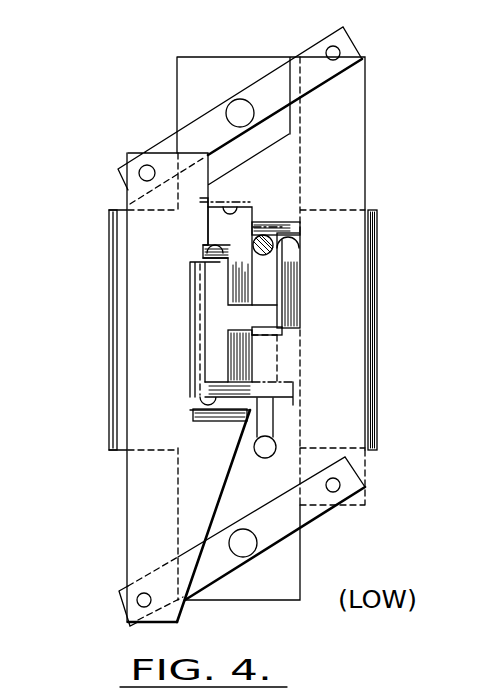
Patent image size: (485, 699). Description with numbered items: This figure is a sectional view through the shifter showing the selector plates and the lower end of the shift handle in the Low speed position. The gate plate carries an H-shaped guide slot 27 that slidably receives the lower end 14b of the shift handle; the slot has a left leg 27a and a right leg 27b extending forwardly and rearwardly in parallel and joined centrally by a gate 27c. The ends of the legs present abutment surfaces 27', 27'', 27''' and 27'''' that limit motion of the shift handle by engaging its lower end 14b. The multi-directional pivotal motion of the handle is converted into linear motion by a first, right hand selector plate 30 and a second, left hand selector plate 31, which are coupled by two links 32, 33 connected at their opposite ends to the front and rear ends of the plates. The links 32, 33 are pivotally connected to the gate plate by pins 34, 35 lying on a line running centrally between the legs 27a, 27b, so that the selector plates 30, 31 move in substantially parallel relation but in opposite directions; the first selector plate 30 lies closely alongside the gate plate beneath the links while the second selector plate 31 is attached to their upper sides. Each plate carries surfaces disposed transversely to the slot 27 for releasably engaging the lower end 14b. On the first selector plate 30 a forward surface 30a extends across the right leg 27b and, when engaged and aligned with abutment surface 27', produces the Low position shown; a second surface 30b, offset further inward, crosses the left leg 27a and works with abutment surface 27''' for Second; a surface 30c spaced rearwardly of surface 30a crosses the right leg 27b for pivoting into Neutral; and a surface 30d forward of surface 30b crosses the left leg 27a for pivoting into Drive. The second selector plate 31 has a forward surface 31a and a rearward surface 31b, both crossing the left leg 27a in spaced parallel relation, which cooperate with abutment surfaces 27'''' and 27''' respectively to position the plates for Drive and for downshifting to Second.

The lower end of the shift handle 14b is at (298, 252).
The H-shaped guide slot 27 is at (169, 306).
The left leg of the guide slot 27a is at (238, 317).
The right leg of the guide slot 27b is at (267, 284).
The gate 27c is at (240, 317).
The abutment surface 27' is at (301, 194).
The abutment surface 27'' is at (302, 410).
The abutment surface 27''' is at (190, 415).
The abutment surface 27'''' is at (181, 247).
The first selector plate 30 is at (348, 417).
The forward surface of the first selector plate 30a is at (300, 247).
The second surface of the first selector plate 30b is at (243, 373).
The neutral surface of the first selector plate 30c is at (282, 330).
The drive surface of the first selector plate 30d is at (270, 187).
The second selector plate 31 is at (138, 482).
The forward surface of the second selector plate 31a is at (190, 273).
The rearward surface of the second selector plate 31b is at (192, 412).
The link 32 is at (205, 133).
The link 33 is at (210, 568).
The pin 34 is at (243, 104).
The pin 35 is at (243, 543).